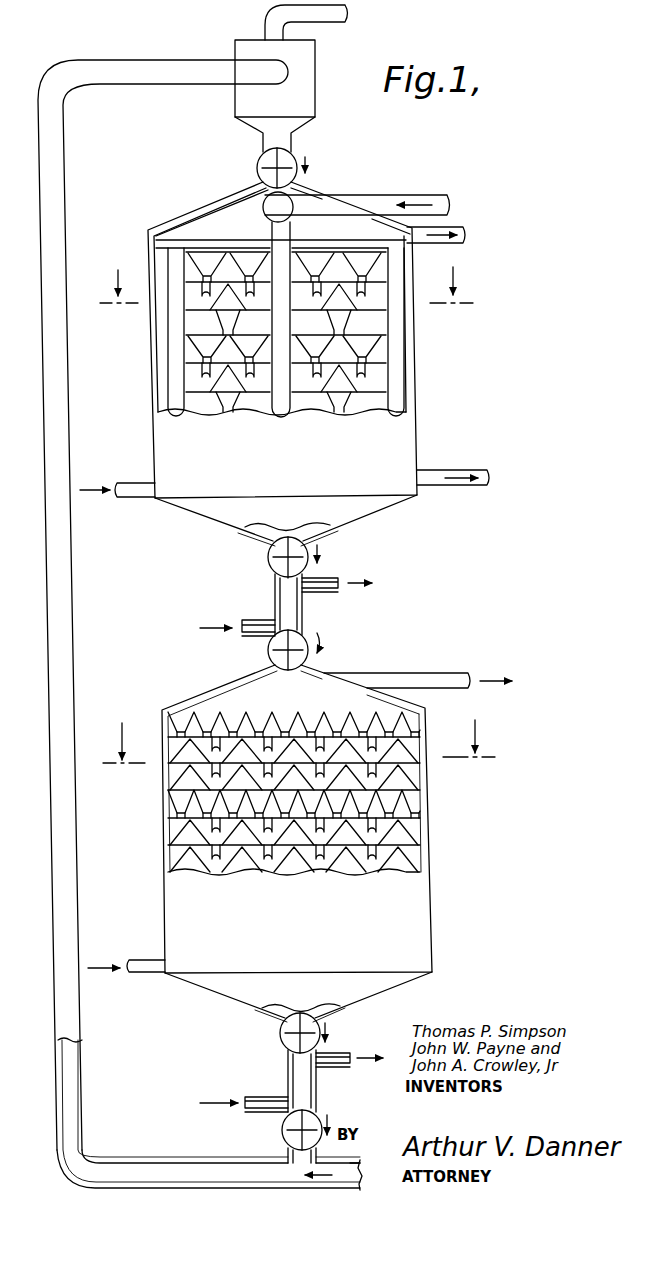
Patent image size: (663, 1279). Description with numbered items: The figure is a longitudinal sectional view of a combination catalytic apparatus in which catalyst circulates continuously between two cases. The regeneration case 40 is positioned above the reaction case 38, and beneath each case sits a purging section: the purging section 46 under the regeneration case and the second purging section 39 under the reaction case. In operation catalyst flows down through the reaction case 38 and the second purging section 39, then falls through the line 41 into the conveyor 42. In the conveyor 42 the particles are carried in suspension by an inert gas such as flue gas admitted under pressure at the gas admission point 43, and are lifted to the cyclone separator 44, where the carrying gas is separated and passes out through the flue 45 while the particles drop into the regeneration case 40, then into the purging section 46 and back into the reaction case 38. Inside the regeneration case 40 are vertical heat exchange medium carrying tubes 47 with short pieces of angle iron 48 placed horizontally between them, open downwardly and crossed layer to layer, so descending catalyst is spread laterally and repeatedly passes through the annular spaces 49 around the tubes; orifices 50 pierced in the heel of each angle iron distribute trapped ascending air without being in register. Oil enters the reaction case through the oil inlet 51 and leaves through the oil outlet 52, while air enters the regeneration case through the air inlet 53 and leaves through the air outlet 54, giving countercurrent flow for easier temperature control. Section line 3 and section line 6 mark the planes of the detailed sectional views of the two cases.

The reaction case 38 is at (432, 885).
The second purging section 39 is at (317, 1083).
The regeneration case 40 is at (418, 418).
The line 41 is at (288, 1145).
The conveyor 42 is at (177, 1173).
The gas admission point 43 is at (357, 1147).
The cyclone separator 44 is at (312, 99).
The flue 45 is at (347, 18).
The purging section 46 is at (303, 606).
The heat exchange medium carrying tubes 47 is at (173, 352).
The angle irons 48 is at (212, 387).
The annular spaces 49 is at (188, 345).
The orifices 50 is at (397, 335).
The oil inlet 51 is at (138, 975).
The oil outlet 52 is at (432, 689).
The air inlet 53 is at (129, 498).
The air outlet 54 is at (433, 243).
The section line 3- 3 is at (286, 285).
The section line 6- 6 is at (299, 741).